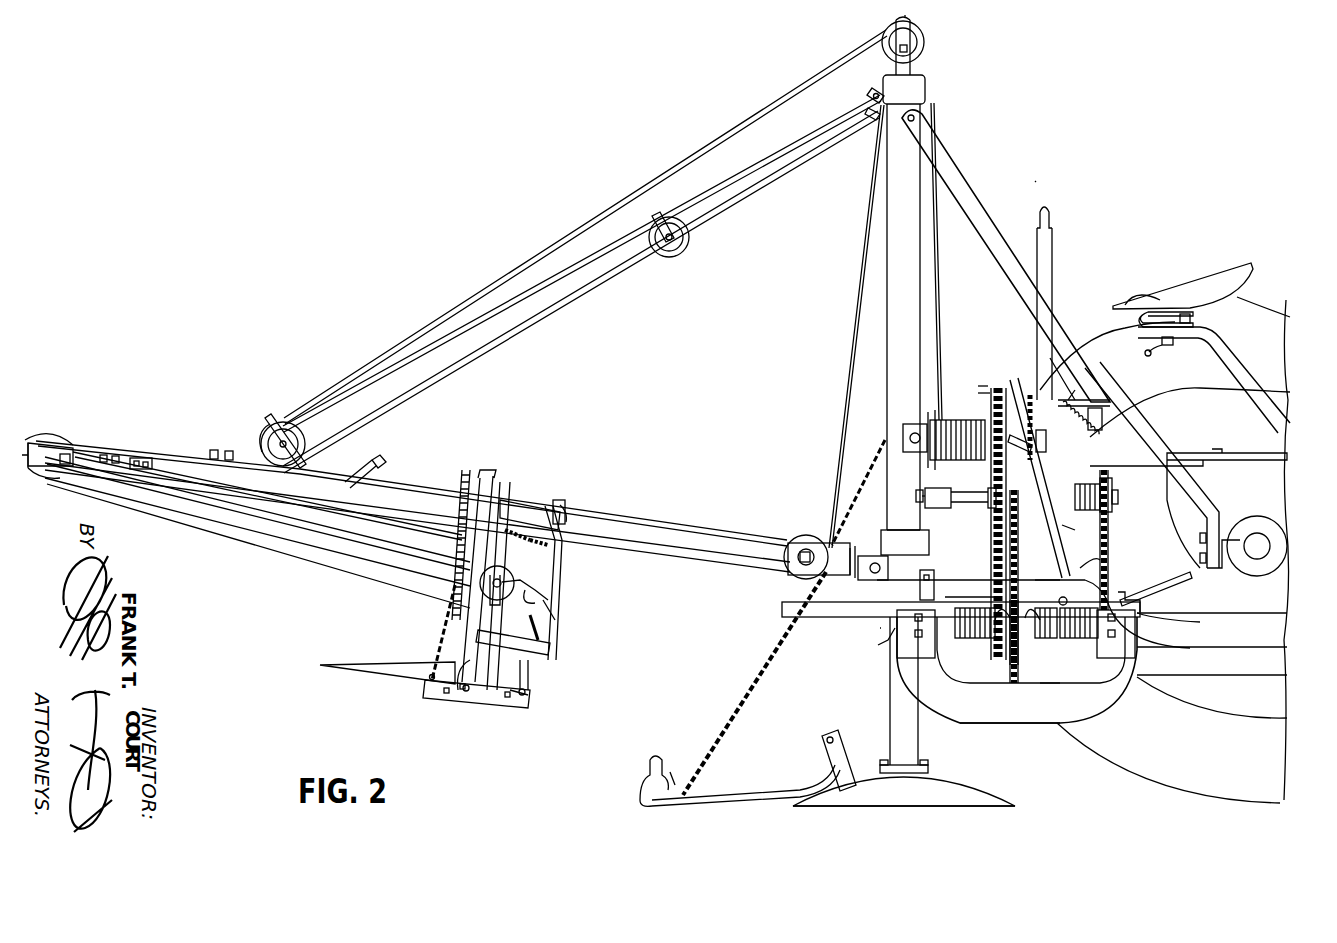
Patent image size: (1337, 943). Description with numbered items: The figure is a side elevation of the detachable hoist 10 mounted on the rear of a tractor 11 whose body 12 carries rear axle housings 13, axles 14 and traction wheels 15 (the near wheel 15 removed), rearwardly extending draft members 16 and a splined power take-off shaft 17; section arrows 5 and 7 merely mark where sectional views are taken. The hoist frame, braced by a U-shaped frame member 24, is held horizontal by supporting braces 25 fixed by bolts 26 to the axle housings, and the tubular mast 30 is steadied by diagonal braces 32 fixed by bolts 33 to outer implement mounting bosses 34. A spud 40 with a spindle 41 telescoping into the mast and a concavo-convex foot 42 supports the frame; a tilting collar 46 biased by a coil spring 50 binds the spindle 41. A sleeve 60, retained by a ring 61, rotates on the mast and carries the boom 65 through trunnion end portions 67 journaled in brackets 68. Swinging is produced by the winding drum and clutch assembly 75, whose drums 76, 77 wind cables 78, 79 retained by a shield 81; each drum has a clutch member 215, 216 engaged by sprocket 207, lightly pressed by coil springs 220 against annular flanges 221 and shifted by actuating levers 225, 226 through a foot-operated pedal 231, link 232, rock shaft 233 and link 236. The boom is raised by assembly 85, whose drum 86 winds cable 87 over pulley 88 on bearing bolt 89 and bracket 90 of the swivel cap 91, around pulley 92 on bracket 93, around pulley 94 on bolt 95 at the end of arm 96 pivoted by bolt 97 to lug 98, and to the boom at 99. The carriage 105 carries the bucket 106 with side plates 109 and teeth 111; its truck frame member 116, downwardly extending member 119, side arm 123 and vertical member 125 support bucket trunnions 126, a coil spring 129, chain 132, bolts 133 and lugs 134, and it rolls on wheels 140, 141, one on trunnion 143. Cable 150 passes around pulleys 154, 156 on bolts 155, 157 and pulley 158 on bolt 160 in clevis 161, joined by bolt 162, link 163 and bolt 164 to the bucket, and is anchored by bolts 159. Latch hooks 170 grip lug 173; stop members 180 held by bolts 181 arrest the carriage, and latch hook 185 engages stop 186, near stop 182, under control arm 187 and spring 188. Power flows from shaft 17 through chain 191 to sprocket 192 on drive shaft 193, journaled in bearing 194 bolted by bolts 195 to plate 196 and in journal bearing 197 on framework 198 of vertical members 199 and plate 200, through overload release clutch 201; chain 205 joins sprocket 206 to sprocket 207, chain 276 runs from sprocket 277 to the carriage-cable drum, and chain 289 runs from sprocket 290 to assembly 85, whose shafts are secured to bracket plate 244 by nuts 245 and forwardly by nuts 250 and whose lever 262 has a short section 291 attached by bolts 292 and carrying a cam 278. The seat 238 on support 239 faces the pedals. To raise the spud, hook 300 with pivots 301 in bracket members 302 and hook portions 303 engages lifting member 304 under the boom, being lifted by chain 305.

The section line 5 is at (905, 15).
The section line 7 is at (867, 637).
The detachable hoist 10 is at (1044, 177).
The tractor 11 is at (1279, 208).
The body 12 is at (1260, 490).
The rear axle housings 13 is at (1254, 578).
The tractor axles 14 is at (1258, 538).
The traction wheels 15 is at (1158, 785).
The draft members 16 is at (1228, 668).
The power take-off shaft 17 is at (1125, 588).
The U-shaped frame member 24 is at (1003, 718).
The supporting braces 25 is at (1185, 578).
The bolts 26 is at (1200, 558).
The mast 30 is at (922, 292).
The diagonal braces 32 is at (958, 192).
The bolts 33 is at (1200, 538).
The outer implement mounting bosses 34 is at (1220, 530).
The spud 40 is at (993, 820).
The spindle 41 is at (892, 712).
The ground engaging foot 42 is at (975, 785).
The collar 46 is at (880, 645).
The coil spring 50 is at (898, 628).
The sleeve 60 is at (918, 546).
The ring 61 is at (920, 528).
The boom 65 is at (622, 516).
The end portions 67 is at (875, 558).
The brackets 68 is at (846, 572).
The winding drum and clutch assembly 75 is at (1046, 680).
The winding drum 76 is at (1080, 640).
The winding drum 77 is at (972, 640).
The cable 78 is at (1060, 600).
The cable 79 is at (965, 604).
The shield 81 is at (818, 608).
The second winding drum and clutch assembly 85 is at (987, 377).
The cable winding drum 86 is at (985, 450).
The cable 87 is at (585, 292).
The pulley 88 is at (920, 40).
The bearing bolt 89 is at (912, 50).
The bracket 90 is at (872, 40).
The swivel cap 91 is at (925, 88).
The pulley 92 is at (290, 420).
The bracket 93 is at (272, 440).
The third pulley 94 is at (686, 243).
The bolt 95 is at (672, 225).
The strut or arm 96 is at (783, 143).
The bolt 97 is at (874, 112).
The lug 98 is at (878, 92).
The cable connection 99 is at (378, 470).
The carriage 105 is at (571, 568).
The material handling bucket 106 is at (498, 716).
The side plates 109 is at (510, 676).
The teeth 111 is at (345, 665).
The truck frame member 116 is at (500, 520).
The downwardly extending frame member 119 is at (570, 593).
The side arm 123 is at (552, 648).
The vertically disposed frame member 125 is at (470, 598).
The trunnions 126 is at (464, 690).
The coil spring 129 is at (462, 532).
The chain 132 is at (445, 615).
The bolts 133 is at (432, 676).
The lugs 134 is at (462, 660).
The wheels 140 is at (575, 518).
The wheels 141 is at (478, 478).
The trunnion 143 is at (570, 520).
The cable 150 is at (852, 348).
The pulley 154 is at (808, 530).
The transverse bolt 155 is at (790, 540).
The pulley 156 is at (48, 438).
The transverse bolt 157 is at (70, 450).
The pulley 158 is at (497, 568).
The bolts 159 is at (118, 455).
The bolt 160 is at (470, 560).
The clevis 161 is at (512, 585).
The bolt 162 is at (552, 528).
The link 163 is at (530, 668).
The bolt 164 is at (525, 700).
The latch hooks 170 is at (535, 603).
The lug 173 is at (540, 622).
The stop members 180 is at (145, 462).
The bolts 181 is at (143, 470).
The stop 182 is at (228, 450).
The latch hook 185 is at (530, 530).
The stop 186 is at (213, 450).
The control arm 187 is at (540, 574).
The spring 188 is at (540, 520).
The driving chain 191 is at (1110, 526).
The sprocket 192 is at (1106, 486).
The drive shaft 193 is at (975, 500).
The bearing 194 is at (948, 490).
The bolts 195 is at (920, 500).
The plate 196 is at (924, 495).
The journal bearing 197 is at (1088, 485).
The framework 198 is at (1100, 420).
The vertical frame members 199 is at (1060, 455).
The plate member 200 is at (1072, 528).
The overload release clutch 201 is at (1125, 445).
The chain 205 is at (1010, 548).
The sprocket 206 is at (1018, 560).
The sprocket 207 is at (1016, 680).
The clutch member 215 is at (995, 645).
The clutch member 216 is at (1040, 640).
The coil springs 220 is at (945, 660).
The annular flange 221 is at (962, 675).
The actuating lever 225 is at (1115, 630).
The actuating lever 226 is at (923, 586).
The foot-operated pedal 231 is at (1012, 398).
The link 232 is at (1100, 560).
The rock shaft 233 is at (1048, 580).
The link 236 is at (975, 572).
The tractor seat 238 is at (1200, 288).
The support 239 is at (1224, 355).
The bracket plate 244 is at (912, 425).
The nuts 245 is at (906, 436).
The nuts 250 is at (1100, 408).
The lever 262 is at (1050, 260).
The power transmitting chain 276 is at (1055, 360).
The sprocket 277 is at (1032, 448).
The cam 278 is at (1010, 440).
The driving chain 289 is at (982, 393).
The sprocket 290 is at (996, 495).
The short section 291 is at (1085, 395).
The bolts 292 is at (1075, 390).
The hook 300 is at (748, 790).
The outwardly turned ends 301 is at (836, 738).
The bracket members 302 is at (840, 762).
The curved hook portions 303 is at (652, 775).
The transverse lifting member 304 is at (770, 565).
The chain 305 is at (752, 665).